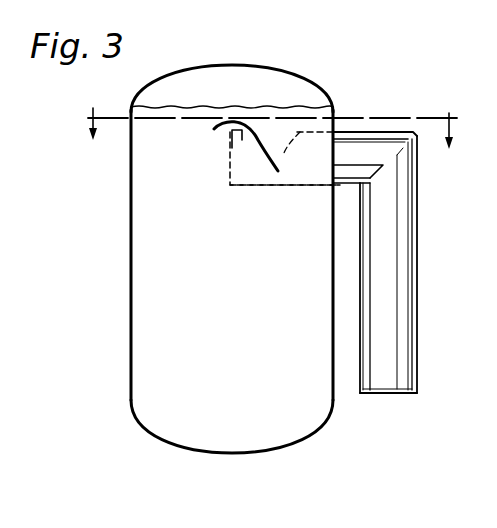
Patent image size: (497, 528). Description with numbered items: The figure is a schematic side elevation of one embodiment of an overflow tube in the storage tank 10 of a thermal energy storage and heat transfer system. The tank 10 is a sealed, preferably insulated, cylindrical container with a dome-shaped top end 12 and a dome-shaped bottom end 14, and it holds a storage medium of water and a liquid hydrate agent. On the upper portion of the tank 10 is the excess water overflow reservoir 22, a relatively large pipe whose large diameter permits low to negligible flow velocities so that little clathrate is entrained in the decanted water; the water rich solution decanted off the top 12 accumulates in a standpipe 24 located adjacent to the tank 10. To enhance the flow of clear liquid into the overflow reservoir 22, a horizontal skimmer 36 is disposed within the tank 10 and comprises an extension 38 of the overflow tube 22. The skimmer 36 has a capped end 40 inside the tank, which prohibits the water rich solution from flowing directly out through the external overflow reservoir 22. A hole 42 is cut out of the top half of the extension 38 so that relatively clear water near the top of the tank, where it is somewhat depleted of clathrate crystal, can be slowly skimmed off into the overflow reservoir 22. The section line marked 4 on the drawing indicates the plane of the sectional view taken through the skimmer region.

The section line 4- 4 is at (274, 140).
The storage tank 10 is at (124, 330).
The dome-shaped top end 12 is at (248, 64).
The dome-shaped bottom end 14 is at (284, 446).
The excess water overflow reservoir 22 is at (370, 140).
The standpipe 24 is at (402, 248).
The horizontal skimmer 36 is at (225, 188).
The extension of the overflow tube 38 is at (292, 186).
The capped end 40 is at (230, 150).
The hole 42 is at (243, 143).